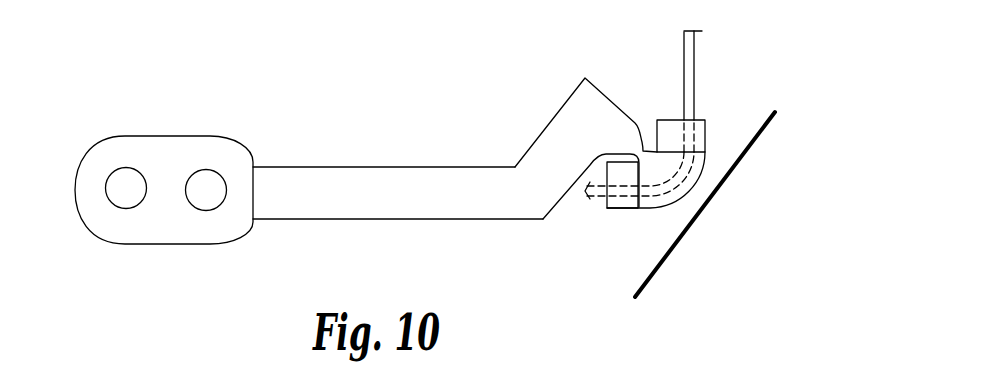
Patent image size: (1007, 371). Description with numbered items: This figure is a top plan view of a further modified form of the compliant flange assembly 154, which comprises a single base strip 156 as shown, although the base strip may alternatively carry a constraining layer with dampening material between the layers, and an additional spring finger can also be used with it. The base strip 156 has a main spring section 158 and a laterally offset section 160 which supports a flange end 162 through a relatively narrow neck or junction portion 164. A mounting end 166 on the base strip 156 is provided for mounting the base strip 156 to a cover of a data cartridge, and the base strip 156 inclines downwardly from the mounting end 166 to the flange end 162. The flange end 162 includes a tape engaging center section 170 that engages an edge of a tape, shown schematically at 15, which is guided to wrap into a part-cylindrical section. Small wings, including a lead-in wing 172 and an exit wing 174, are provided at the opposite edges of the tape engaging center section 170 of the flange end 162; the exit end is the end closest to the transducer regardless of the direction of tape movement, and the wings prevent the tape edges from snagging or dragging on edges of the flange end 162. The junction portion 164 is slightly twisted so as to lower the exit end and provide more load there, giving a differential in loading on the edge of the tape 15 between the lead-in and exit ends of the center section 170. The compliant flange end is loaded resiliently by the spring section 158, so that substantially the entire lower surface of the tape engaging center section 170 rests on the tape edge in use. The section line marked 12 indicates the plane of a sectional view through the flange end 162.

The section line 12- 12 is at (737, 78).
The tape 15 is at (694, 55).
The compliant flange assembly 154 is at (309, 188).
The base strip 156 is at (387, 196).
The main spring section 158 is at (355, 197).
The laterally offset section 160 is at (565, 140).
The flange end 162 is at (668, 204).
The junction portion 164 is at (641, 147).
The mounting end 166 is at (170, 148).
The tape engaging center section 170 is at (715, 158).
The lead-in wing 172 is at (606, 208).
The exit wing 174 is at (670, 120).